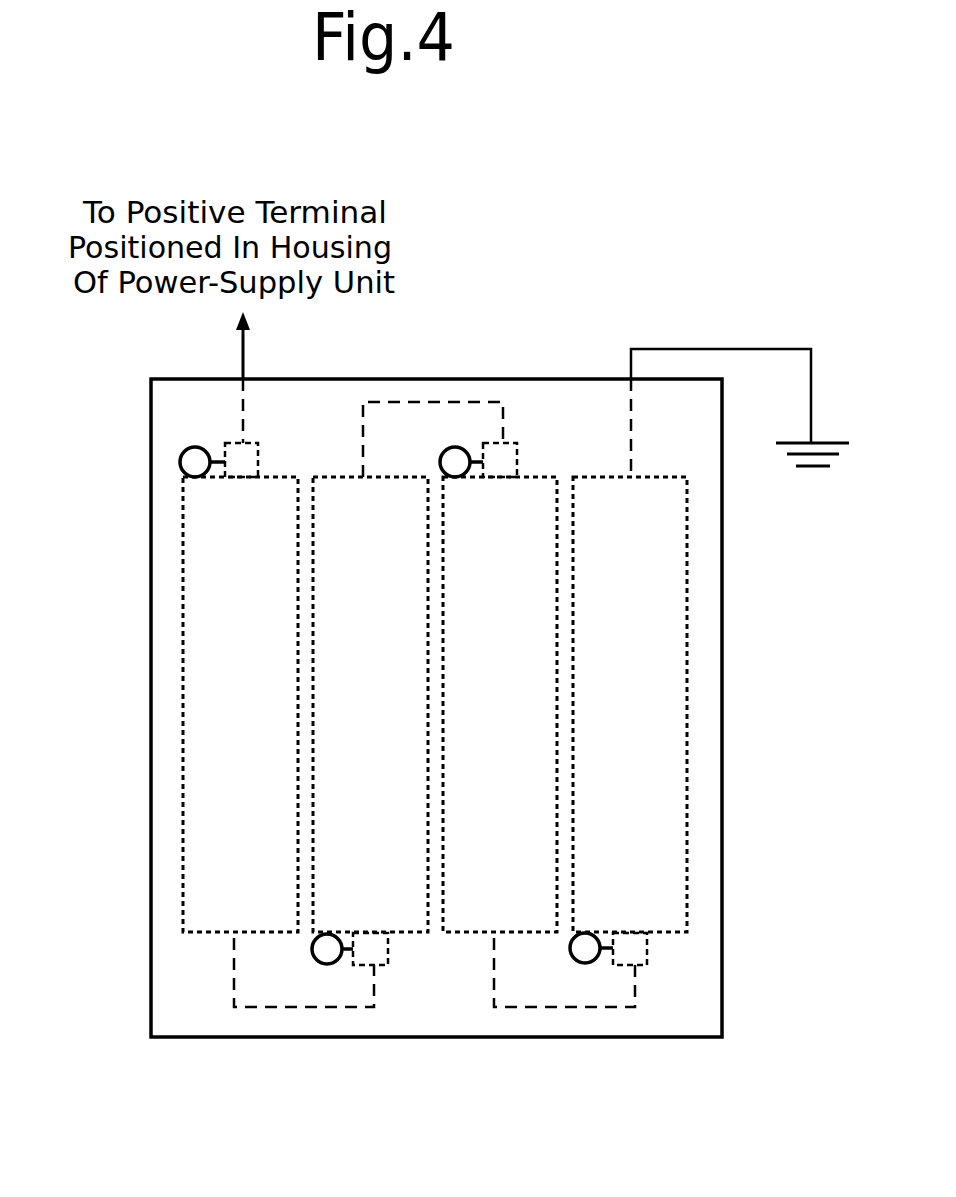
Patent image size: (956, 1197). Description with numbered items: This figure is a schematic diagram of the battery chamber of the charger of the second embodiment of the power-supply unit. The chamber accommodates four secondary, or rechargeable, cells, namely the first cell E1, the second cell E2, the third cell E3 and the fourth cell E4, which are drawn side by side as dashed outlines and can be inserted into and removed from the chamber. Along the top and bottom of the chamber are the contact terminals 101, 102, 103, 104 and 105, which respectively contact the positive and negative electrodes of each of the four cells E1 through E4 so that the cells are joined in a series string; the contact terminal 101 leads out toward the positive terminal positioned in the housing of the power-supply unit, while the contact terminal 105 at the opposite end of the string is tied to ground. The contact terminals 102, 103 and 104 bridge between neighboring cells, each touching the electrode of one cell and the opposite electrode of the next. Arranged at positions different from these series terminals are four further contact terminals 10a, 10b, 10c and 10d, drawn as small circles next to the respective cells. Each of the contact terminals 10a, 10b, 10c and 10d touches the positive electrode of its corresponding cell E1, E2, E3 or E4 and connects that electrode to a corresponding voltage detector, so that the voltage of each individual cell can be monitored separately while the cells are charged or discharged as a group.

The contact terminal 101 is at (243, 409).
The contact terminal 102 is at (315, 1010).
The contact terminal 103 is at (441, 402).
The contact terminal 104 is at (575, 1010).
The contact terminal 105 is at (631, 398).
The contact terminal 10a is at (195, 461).
The contact terminal 10b is at (327, 949).
The contact terminal 10c is at (455, 462).
The contact terminal 10d is at (585, 948).
The first cell E1 is at (240, 704).
The second cell E2 is at (370, 704).
The third cell E3 is at (500, 704).
The fourth cell E4 is at (630, 704).